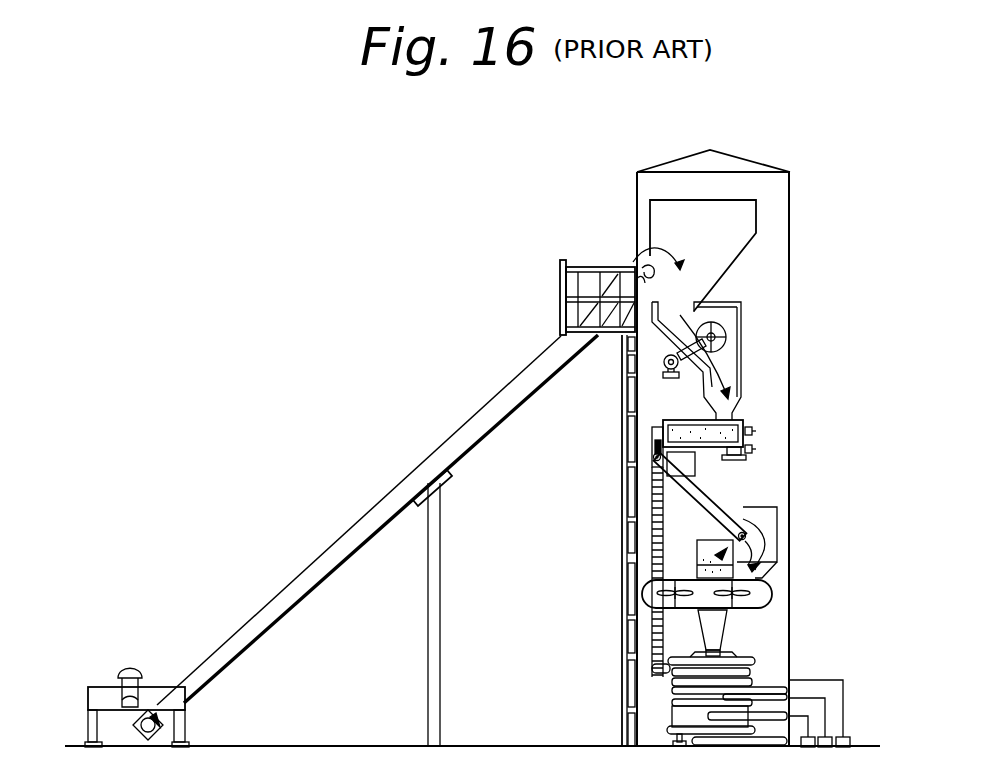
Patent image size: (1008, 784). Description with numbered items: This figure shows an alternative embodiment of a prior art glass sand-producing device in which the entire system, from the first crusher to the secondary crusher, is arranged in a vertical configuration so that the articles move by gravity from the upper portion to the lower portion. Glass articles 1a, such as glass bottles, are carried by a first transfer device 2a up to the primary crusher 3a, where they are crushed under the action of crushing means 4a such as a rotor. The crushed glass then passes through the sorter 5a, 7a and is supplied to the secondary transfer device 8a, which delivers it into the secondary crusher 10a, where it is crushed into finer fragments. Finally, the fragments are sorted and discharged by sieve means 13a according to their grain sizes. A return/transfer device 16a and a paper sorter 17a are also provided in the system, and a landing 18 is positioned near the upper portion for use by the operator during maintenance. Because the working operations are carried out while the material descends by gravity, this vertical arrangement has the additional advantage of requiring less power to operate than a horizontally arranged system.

The glass articles 1a is at (131, 666).
The first transfer device 2a is at (427, 470).
The primary crusher 3a is at (735, 228).
The crushing means 4a is at (733, 352).
The sorter 5a is at (783, 440).
The sorter 7a is at (748, 436).
The secondary transfer device 8a is at (710, 493).
The secondary crusher 10a is at (753, 587).
The sieve means 13a is at (743, 655).
The return/transfer device 16a is at (655, 628).
The paper sorter 17a is at (653, 428).
The landing 18 is at (560, 298).